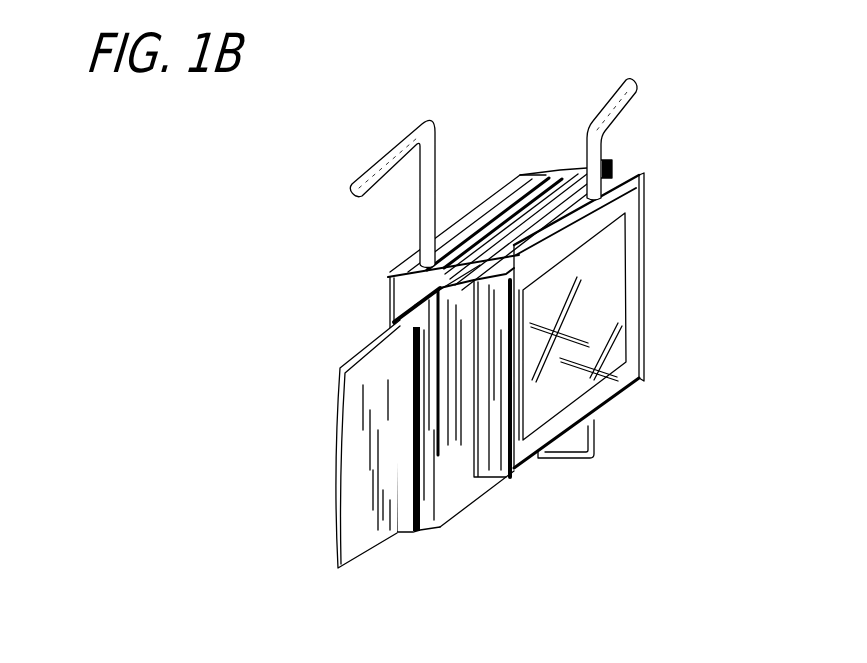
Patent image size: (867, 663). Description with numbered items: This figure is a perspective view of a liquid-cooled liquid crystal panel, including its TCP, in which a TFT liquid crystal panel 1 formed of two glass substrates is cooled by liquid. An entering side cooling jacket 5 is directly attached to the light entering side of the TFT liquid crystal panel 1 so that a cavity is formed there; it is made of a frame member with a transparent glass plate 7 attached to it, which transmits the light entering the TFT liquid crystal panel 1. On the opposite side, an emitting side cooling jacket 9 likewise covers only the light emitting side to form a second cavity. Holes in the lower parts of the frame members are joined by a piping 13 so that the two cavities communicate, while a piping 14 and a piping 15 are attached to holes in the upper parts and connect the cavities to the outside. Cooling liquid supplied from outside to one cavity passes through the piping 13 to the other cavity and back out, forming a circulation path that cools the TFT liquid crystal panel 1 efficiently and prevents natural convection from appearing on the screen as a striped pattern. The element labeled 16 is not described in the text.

The TFT liquid crystal panel 1 is at (577, 168).
The entering side cooling jacket 5 is at (644, 234).
The transparent glass plate 7 is at (617, 313).
The emitting side cooling jacket 9 is at (397, 275).
The piping 13 is at (596, 437).
The piping 14 is at (630, 103).
The piping 15 is at (357, 170).
The end plate 16 is at (367, 348).